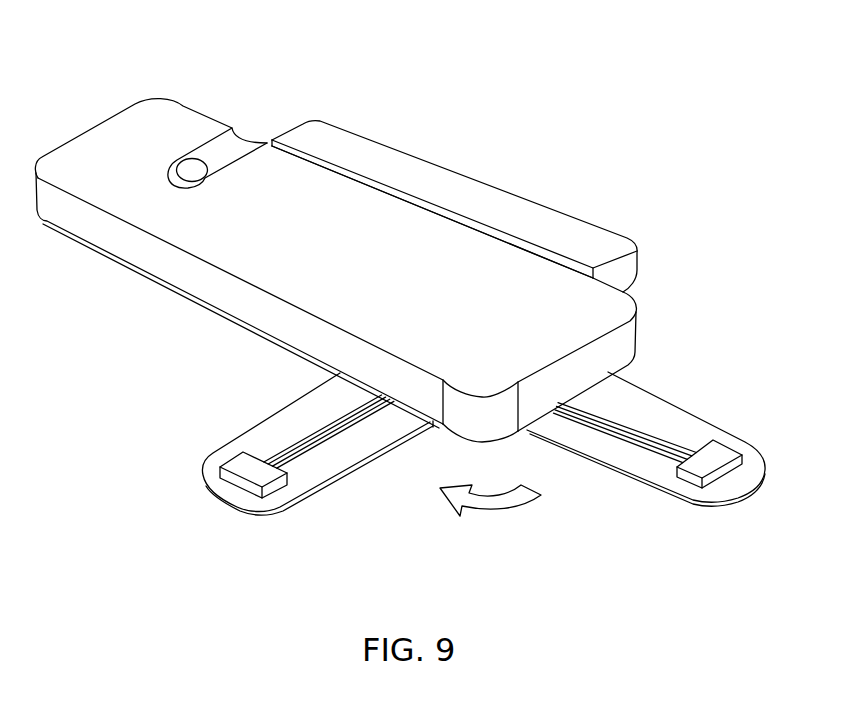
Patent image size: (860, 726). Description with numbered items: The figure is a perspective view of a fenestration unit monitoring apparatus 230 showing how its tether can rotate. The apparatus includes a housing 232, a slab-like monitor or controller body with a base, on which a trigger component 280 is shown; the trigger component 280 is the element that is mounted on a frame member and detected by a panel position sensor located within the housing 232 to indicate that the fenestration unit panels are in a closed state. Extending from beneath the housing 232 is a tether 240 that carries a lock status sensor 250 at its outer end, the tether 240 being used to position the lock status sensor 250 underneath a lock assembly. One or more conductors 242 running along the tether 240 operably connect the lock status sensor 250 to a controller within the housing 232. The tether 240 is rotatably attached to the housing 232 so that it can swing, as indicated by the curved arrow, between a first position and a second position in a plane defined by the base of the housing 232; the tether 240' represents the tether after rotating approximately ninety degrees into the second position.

The fenestration unit monitoring apparatus 230 is at (237, 107).
The housing 232 is at (121, 117).
The trigger component 280 is at (465, 181).
The tether 240 is at (646, 464).
The tether 240' is at (317, 458).
The conductors 242 is at (642, 427).
The lock status sensor 250 is at (717, 474).